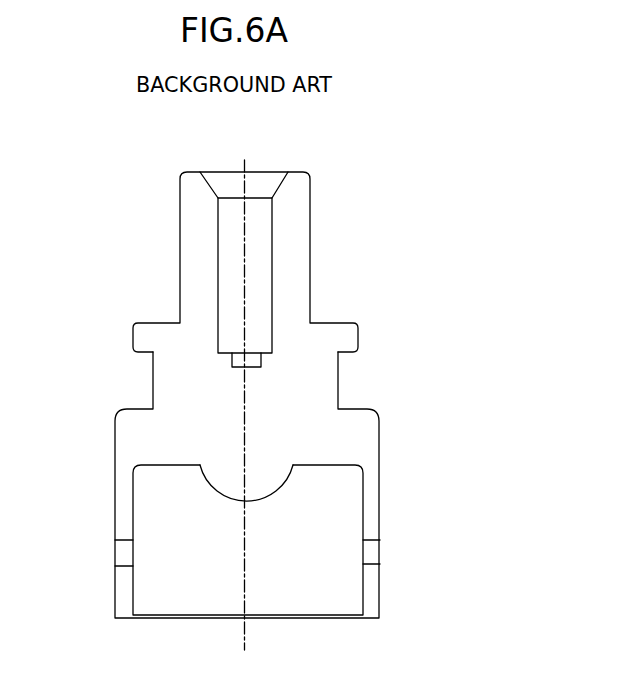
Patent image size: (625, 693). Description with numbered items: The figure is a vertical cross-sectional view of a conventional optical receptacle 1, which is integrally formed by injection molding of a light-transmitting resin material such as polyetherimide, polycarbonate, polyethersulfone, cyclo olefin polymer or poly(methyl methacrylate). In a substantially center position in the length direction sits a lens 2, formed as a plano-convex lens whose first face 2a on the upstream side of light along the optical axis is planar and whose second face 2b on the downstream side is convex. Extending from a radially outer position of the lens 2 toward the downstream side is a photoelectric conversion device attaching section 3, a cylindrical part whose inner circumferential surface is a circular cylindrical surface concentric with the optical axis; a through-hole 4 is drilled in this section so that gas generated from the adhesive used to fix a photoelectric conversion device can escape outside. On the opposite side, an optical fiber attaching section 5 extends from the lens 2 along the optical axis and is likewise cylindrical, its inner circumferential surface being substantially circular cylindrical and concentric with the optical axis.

The optical receptacle 1 is at (134, 194).
The lens 2 is at (37, 382).
The first face 2a is at (236, 356).
The second face 2b is at (212, 486).
The photoelectric conversion device attaching section 3 is at (115, 521).
The through-hole 4 is at (121, 566).
The optical fiber attaching section 5 is at (179, 275).